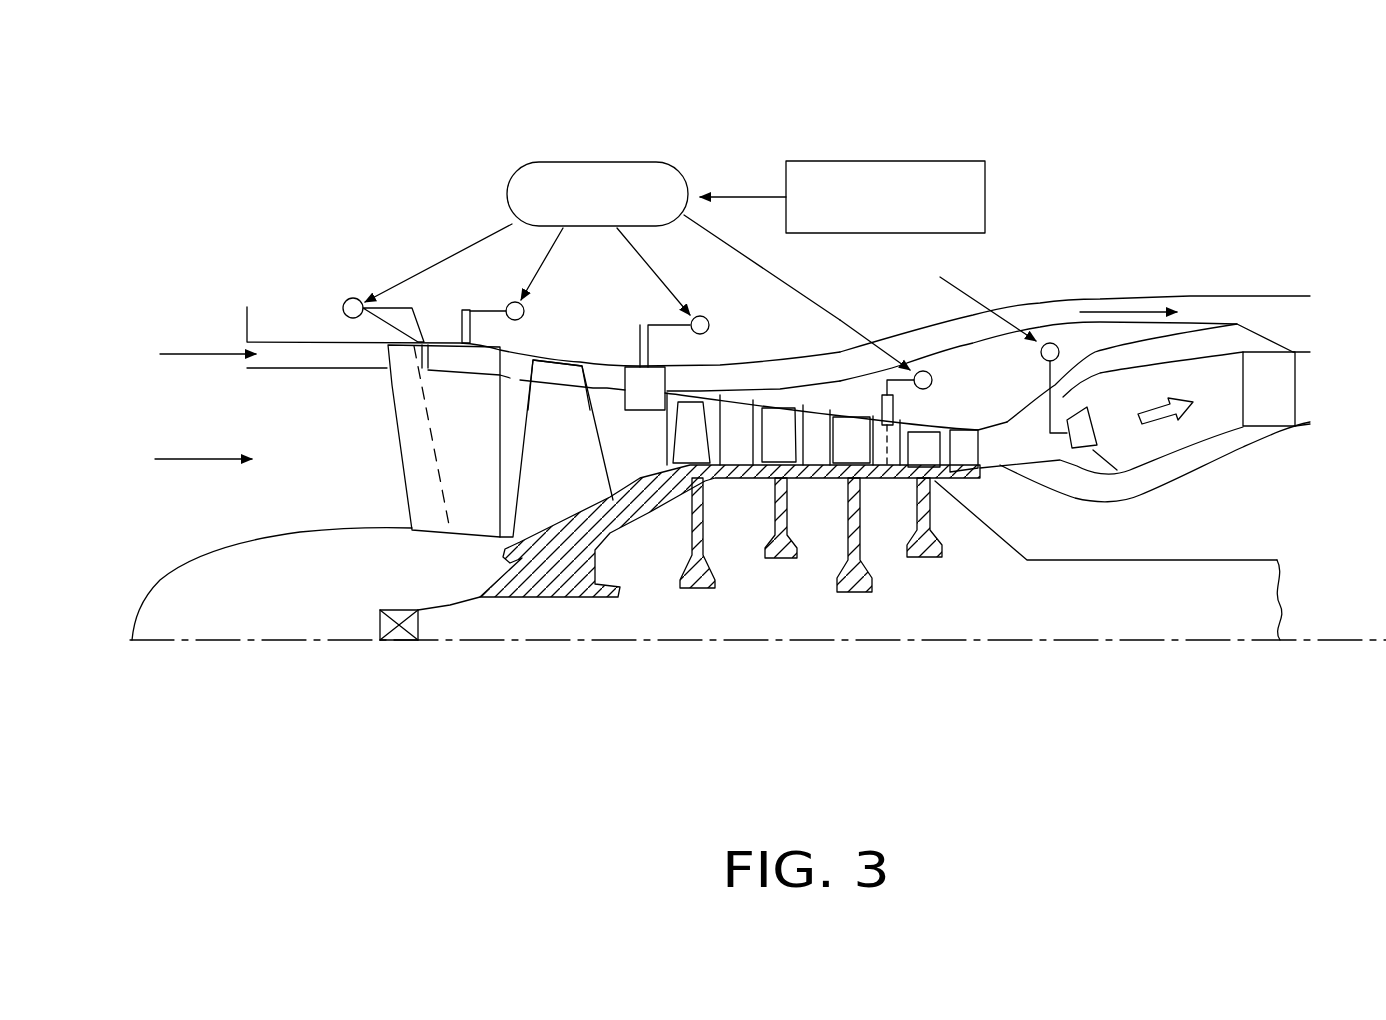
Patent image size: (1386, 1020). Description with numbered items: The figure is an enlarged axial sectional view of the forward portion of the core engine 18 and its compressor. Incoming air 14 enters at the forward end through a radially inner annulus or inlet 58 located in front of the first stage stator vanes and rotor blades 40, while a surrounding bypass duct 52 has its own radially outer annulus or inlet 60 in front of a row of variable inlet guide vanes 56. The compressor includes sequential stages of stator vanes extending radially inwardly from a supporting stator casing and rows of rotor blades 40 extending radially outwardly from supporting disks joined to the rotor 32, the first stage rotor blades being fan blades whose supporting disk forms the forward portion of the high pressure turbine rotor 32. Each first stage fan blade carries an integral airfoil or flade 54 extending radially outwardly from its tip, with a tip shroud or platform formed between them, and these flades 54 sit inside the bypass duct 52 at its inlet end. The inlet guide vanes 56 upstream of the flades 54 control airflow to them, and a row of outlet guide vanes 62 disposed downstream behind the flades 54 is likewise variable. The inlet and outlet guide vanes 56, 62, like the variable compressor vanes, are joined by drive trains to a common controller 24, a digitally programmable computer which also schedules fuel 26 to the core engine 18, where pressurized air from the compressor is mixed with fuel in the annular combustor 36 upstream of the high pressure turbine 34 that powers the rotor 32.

The incoming air 14 is at (177, 458).
The core engine 18 is at (596, 642).
The controller 24 is at (830, 160).
The fuel 26 is at (970, 295).
The rotor 32 is at (1079, 562).
The high pressure turbine 34 is at (1297, 452).
The annular combustor 36 is at (1152, 404).
The rotor blades 40 is at (576, 466).
The bypass duct 52 is at (784, 375).
The flade 54 is at (550, 370).
The variable inlet guide vanes 56 is at (448, 353).
The inner inlet 58 is at (334, 493).
The outer inlet 60 is at (283, 342).
The outlet guide vanes 62 is at (670, 378).